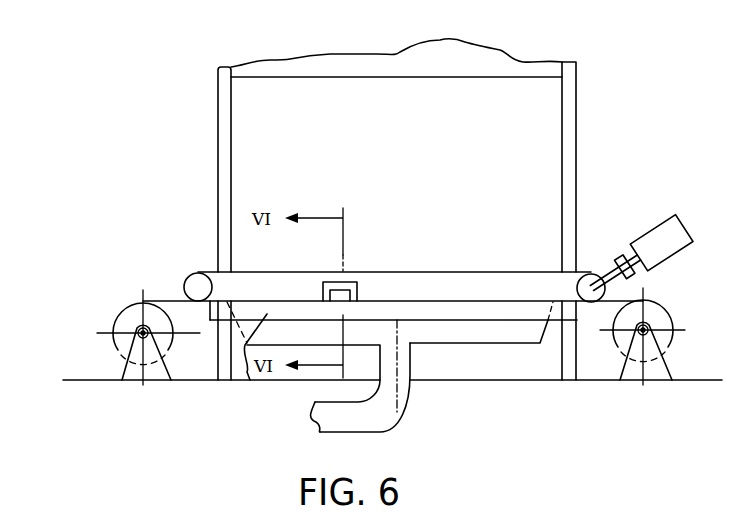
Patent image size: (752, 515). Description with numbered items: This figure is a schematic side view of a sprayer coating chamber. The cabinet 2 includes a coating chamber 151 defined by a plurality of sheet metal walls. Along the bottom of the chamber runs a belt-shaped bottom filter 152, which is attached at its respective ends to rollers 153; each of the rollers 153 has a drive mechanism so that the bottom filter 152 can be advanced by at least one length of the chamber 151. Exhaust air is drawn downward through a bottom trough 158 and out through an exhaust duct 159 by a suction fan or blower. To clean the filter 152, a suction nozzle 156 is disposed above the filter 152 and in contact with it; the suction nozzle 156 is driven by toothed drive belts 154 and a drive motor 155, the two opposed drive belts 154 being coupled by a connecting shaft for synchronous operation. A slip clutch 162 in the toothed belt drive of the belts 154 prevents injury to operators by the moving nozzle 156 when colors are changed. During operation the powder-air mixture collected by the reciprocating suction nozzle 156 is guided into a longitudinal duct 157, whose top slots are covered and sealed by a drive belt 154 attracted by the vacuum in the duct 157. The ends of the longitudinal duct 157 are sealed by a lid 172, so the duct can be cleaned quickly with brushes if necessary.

The cabinet 2 is at (528, 58).
The coating chamber 151 is at (553, 160).
The belt-shaped bottom filter 152 is at (170, 300).
The rollers 153 is at (118, 321).
The drive belts 154 is at (208, 272).
The drive motor 155 is at (676, 237).
The suction nozzle 156 is at (361, 276).
The longitudinal duct 157 is at (250, 383).
The bottom trough 158 is at (478, 344).
The exhaust duct 159 is at (397, 410).
The slip clutch 162 is at (617, 255).
The lid 172 is at (208, 323).